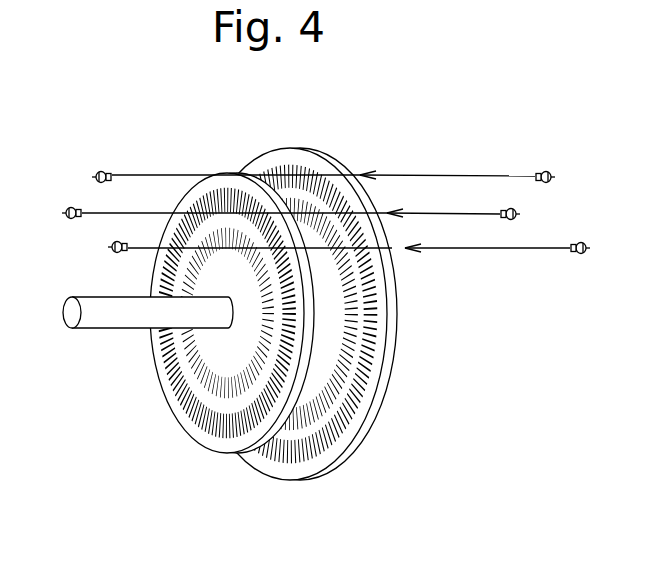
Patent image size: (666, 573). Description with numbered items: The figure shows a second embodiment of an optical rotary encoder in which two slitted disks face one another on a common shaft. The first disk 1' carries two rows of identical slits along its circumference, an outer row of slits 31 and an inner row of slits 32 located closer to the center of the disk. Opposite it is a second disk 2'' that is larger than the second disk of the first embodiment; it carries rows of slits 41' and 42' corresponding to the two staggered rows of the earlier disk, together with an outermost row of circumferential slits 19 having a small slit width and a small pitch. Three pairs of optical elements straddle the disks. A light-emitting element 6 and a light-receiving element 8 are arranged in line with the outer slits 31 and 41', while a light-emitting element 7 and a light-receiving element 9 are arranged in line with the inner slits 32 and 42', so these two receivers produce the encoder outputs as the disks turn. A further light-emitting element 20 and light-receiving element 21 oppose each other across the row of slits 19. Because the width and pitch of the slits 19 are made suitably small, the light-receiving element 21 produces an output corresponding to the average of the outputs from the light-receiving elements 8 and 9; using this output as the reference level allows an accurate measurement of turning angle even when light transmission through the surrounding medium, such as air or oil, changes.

The disk 1' is at (232, 348).
The disk 2'' is at (309, 314).
The slits 31 is at (202, 195).
The slits 32 is at (197, 375).
The circumferential slits 19 is at (297, 163).
The slits 41' is at (346, 366).
The slits 42' is at (329, 246).
The light-emitting element 6 is at (520, 214).
The light-emitting element 7 is at (583, 257).
The light-emitting element 20 is at (548, 170).
The light-receiving element 8 is at (63, 215).
The light-receiving element 9 is at (110, 250).
The light-receiving element 21 is at (102, 170).